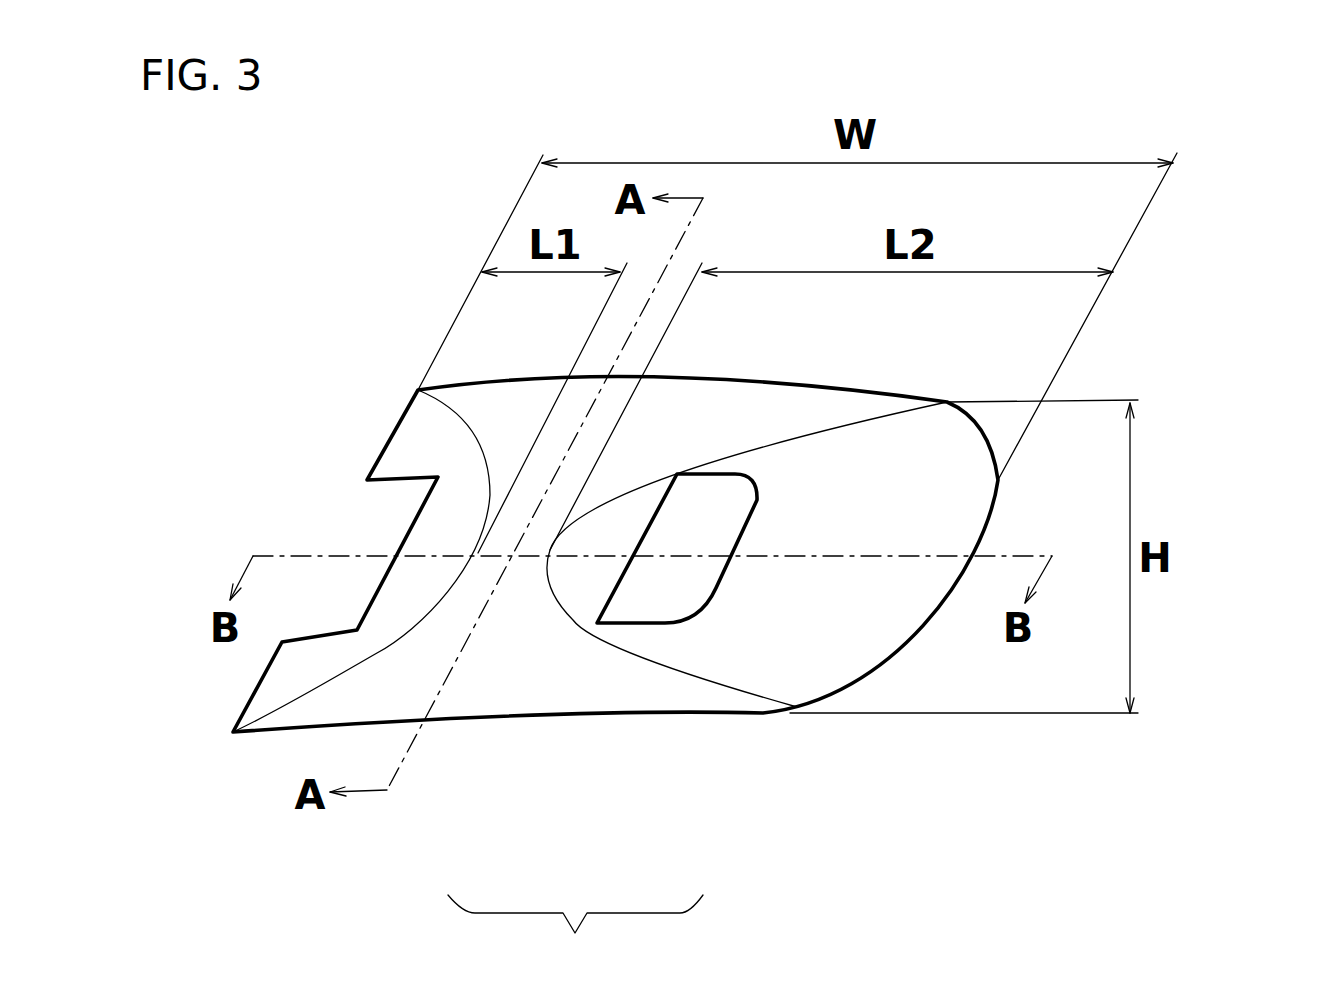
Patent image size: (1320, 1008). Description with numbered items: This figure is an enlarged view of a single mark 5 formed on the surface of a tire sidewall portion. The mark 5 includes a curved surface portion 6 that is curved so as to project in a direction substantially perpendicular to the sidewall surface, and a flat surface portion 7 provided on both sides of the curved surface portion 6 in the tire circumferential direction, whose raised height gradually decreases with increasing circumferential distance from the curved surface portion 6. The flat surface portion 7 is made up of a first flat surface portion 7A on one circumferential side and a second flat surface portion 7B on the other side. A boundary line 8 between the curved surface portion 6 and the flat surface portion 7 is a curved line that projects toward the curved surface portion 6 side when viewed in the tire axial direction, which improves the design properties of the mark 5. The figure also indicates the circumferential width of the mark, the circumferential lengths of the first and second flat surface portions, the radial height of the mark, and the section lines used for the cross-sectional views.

The mark 5 is at (1123, 353).
The curved surface portion 6 is at (680, 430).
The flat surface portion 7 is at (575, 938).
The first flat surface portion 7A is at (417, 588).
The second flat surface portion 7B is at (742, 633).
The boundary line 8 is at (575, 617).